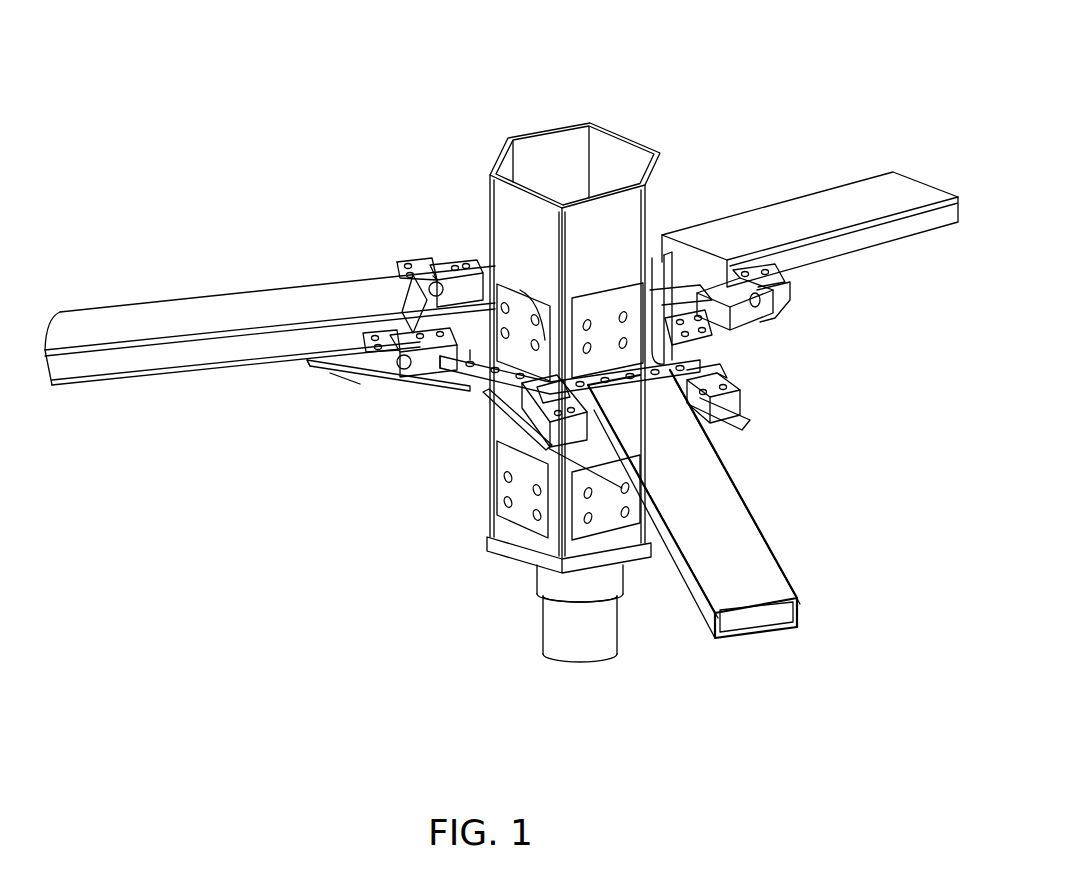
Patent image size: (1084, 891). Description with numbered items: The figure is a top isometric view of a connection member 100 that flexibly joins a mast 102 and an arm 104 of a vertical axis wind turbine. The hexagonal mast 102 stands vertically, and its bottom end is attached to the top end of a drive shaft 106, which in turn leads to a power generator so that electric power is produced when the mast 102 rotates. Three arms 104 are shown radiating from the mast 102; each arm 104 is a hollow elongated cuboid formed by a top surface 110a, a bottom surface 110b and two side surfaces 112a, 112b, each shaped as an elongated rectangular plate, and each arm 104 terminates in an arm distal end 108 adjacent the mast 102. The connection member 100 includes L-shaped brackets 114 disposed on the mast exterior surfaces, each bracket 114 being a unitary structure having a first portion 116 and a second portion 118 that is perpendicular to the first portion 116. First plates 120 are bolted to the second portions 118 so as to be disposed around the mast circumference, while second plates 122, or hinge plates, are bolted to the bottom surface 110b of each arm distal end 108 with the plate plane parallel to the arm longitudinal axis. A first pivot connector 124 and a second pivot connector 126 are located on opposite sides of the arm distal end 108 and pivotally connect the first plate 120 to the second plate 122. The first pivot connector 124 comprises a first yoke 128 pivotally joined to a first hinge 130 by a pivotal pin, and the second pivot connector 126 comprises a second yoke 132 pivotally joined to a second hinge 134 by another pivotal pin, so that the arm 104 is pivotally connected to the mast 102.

The connection member 100 is at (504, 422).
The mast 102 is at (652, 172).
The arm 104 is at (750, 536).
The drive shaft 106 is at (557, 628).
The arm distal end 108 is at (742, 433).
The top surface 110a is at (748, 568).
The bottom surface 110b is at (740, 628).
The side surface 112a is at (685, 573).
The side surface 112b is at (799, 604).
The L-shaped bracket 114 is at (407, 298).
The first portion 116 is at (665, 240).
The second portion 118 is at (613, 320).
The first plate 120 is at (752, 326).
The second plate 122 is at (318, 369).
The first pivot connector 124 is at (522, 426).
The second pivot connector 126 is at (775, 352).
The first yoke 128 is at (498, 318).
The first hinge 130 is at (545, 330).
The second yoke 132 is at (735, 364).
The second hinge 134 is at (735, 392).